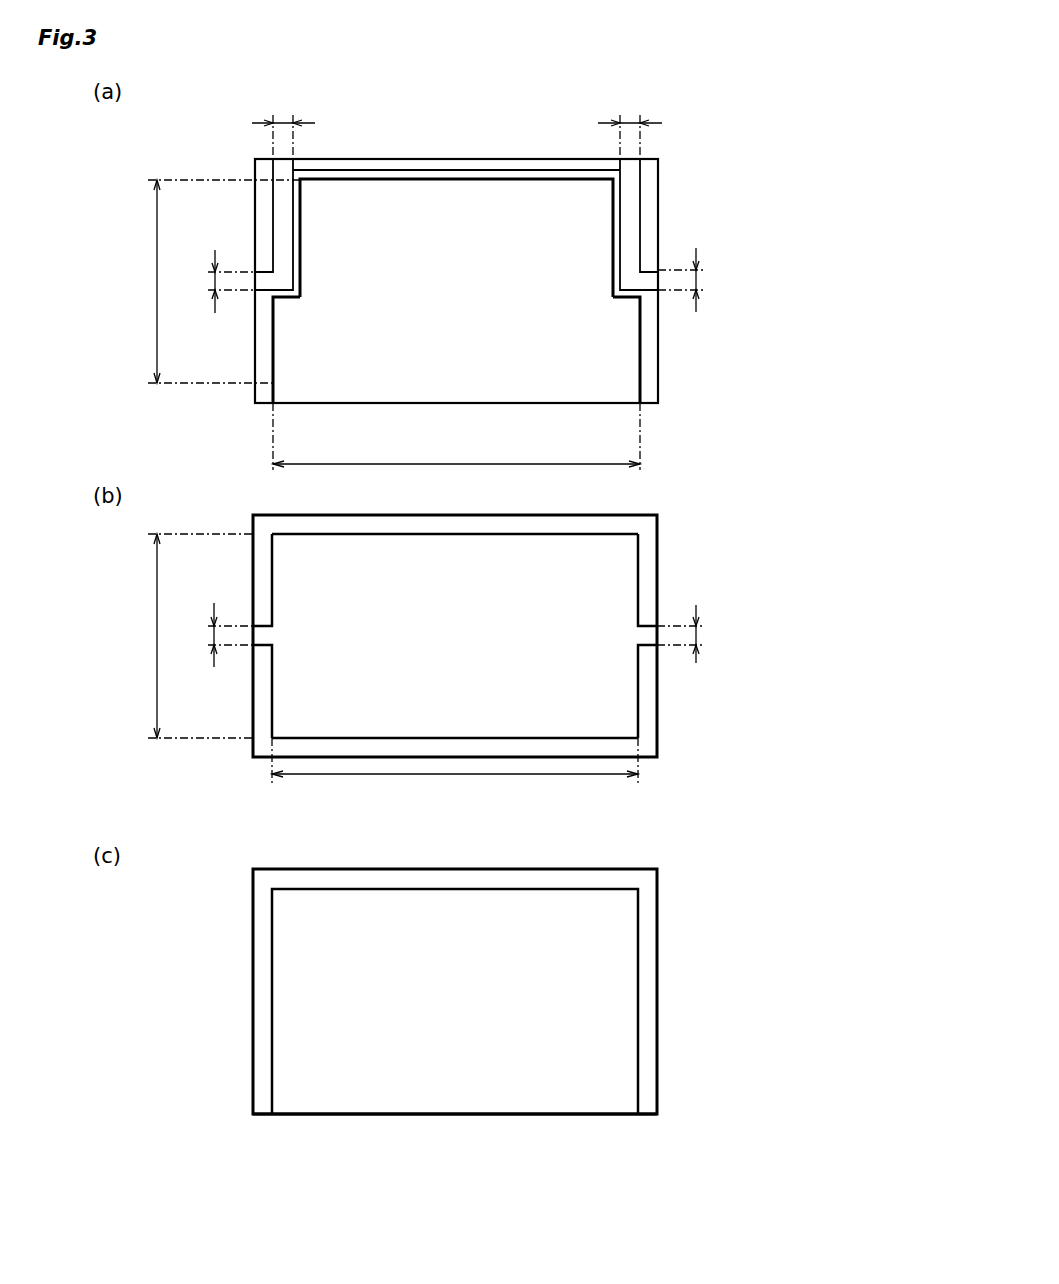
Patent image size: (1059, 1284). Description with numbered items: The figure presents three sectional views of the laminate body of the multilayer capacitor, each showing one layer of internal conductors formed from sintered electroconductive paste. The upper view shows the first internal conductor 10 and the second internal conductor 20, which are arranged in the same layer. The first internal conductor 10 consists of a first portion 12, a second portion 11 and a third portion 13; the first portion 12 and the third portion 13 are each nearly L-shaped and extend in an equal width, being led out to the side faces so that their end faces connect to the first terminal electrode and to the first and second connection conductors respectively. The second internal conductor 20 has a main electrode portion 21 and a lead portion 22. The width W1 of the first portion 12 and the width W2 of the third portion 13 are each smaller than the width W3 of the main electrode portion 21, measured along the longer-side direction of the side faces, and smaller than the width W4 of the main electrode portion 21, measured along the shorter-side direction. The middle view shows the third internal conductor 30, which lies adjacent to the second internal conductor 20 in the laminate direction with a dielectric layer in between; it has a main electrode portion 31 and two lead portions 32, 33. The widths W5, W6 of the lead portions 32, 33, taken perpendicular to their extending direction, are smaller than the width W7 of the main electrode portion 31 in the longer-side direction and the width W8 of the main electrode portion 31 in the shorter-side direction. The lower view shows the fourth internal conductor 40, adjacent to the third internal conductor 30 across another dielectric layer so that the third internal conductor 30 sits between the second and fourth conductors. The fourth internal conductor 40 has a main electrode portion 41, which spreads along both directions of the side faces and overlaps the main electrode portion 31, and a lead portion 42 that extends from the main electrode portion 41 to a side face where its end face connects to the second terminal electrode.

The first internal conductor 10 is at (463, 252).
The second portion 11 is at (465, 168).
The first portion 12 is at (283, 212).
The third portion 13 is at (632, 208).
The second internal conductor 20 is at (501, 318).
The main electrode portion 21 is at (475, 315).
The lead portion 22 is at (473, 390).
The third internal conductor 30 is at (476, 636).
The main electrode portion 31 is at (502, 584).
The lead portion 32 is at (260, 637).
The lead portion 33 is at (648, 635).
The fourth internal conductor 40 is at (500, 1018).
The main electrode portion 41 is at (500, 993).
The lead portion 42 is at (473, 1100).
The width of the first portion W1 is at (280, 121).
The width of the third portion W2 is at (628, 121).
The width of the main electrode portion W3 is at (408, 462).
The width of the main electrode portion W4 is at (156, 280).
The width of the lead portion W5 is at (213, 636).
The width of the lead portion W6 is at (700, 634).
The width of the main electrode portion W7 is at (457, 776).
The width of the main electrode portion W8 is at (156, 634).